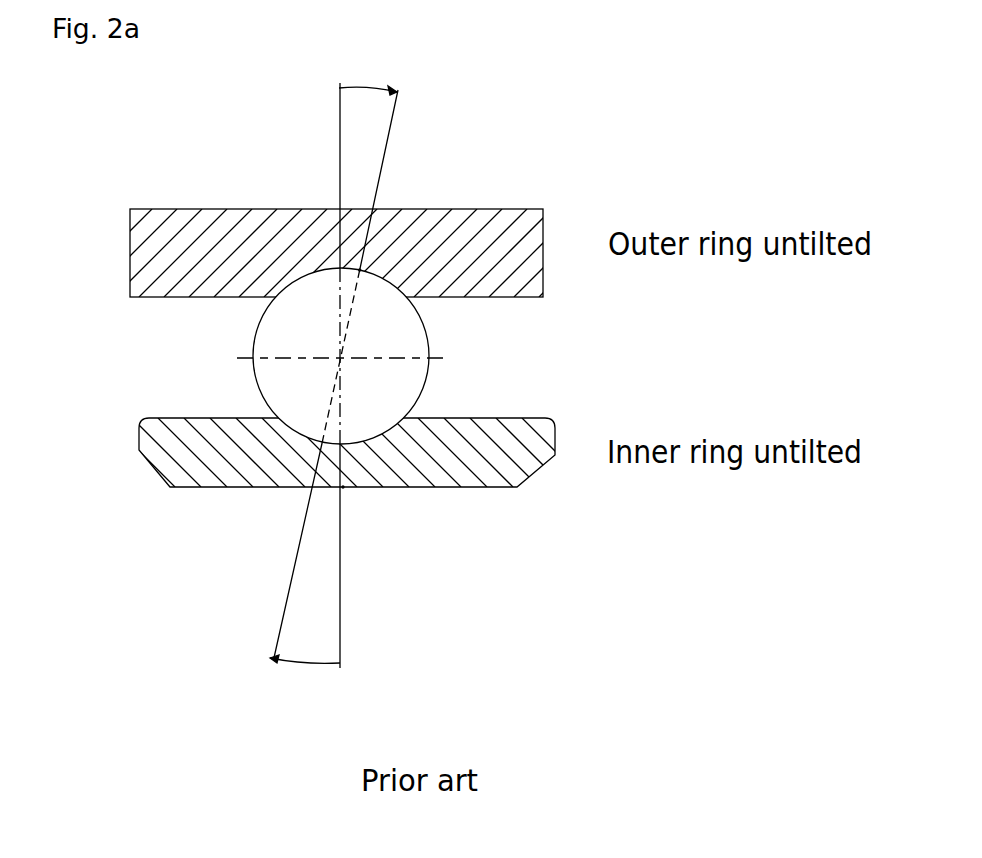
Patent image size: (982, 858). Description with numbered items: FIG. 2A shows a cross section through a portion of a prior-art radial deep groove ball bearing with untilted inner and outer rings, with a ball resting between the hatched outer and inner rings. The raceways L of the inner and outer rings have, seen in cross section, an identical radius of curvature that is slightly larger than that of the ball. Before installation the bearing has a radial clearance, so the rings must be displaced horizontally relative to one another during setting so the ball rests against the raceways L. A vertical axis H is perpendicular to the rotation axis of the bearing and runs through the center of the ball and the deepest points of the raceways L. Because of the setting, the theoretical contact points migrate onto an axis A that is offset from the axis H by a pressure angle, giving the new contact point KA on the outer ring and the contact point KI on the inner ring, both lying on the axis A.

The axis A is at (381, 173).
The axis H is at (340, 623).
The raceway L is at (392, 428).
The contact point on the outer ring KA is at (360, 270).
The contact point on the inner ring KI is at (343, 487).